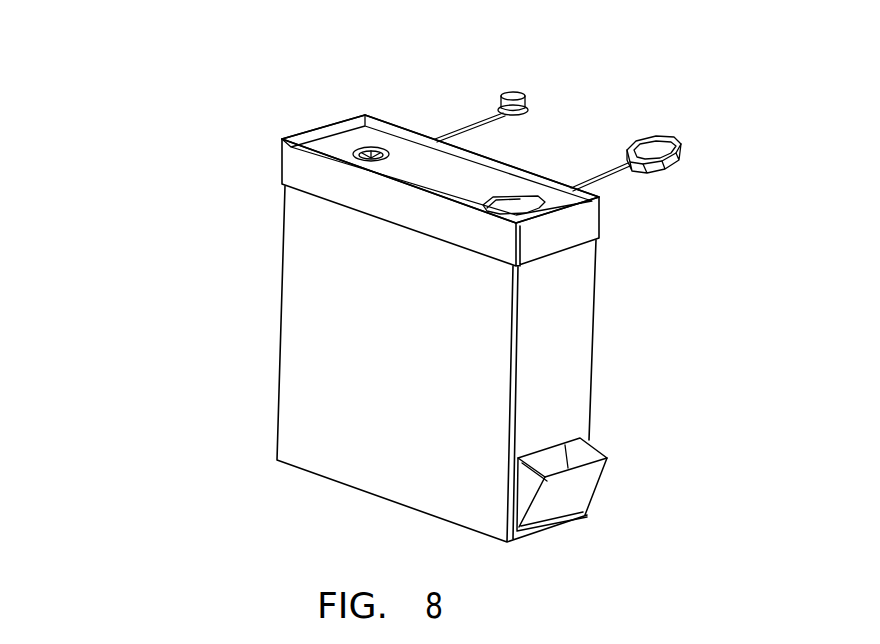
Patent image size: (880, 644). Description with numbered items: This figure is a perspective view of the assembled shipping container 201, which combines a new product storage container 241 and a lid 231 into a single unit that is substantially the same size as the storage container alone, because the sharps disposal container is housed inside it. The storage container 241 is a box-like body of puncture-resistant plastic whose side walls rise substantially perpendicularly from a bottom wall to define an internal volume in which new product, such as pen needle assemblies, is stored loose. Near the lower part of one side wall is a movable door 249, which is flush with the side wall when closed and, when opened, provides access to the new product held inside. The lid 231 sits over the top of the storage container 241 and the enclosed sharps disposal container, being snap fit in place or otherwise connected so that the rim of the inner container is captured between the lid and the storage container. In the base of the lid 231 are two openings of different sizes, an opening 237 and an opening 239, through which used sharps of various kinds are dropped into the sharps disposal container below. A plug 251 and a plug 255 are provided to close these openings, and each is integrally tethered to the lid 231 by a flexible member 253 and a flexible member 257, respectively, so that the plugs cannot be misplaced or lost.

The shipping container 201 is at (196, 337).
The lid 231 is at (268, 170).
The opening 237 is at (370, 150).
The opening 239 is at (503, 197).
The storage container 241 is at (610, 371).
The movable door 249 is at (597, 480).
The plug 251 is at (527, 100).
The flexible member 253 is at (462, 125).
The plug 255 is at (681, 148).
The flexible member 257 is at (612, 178).